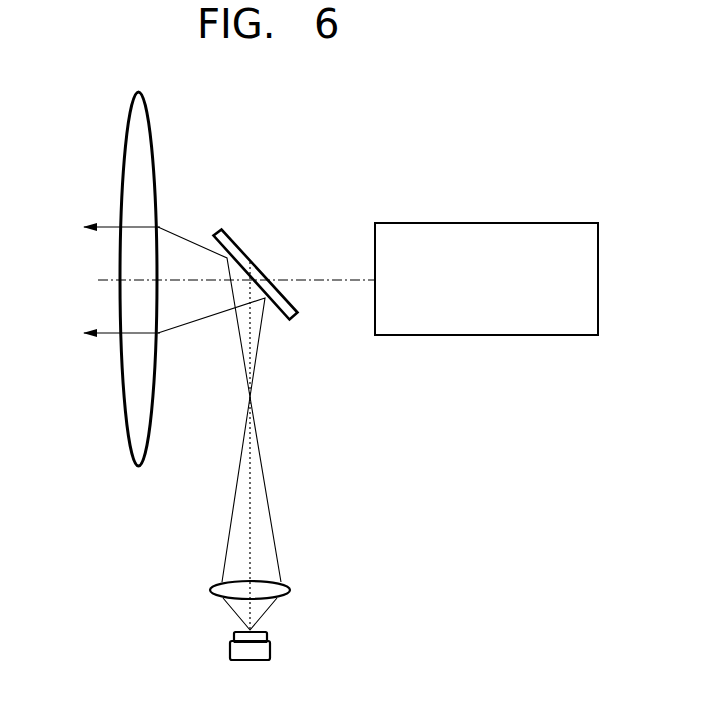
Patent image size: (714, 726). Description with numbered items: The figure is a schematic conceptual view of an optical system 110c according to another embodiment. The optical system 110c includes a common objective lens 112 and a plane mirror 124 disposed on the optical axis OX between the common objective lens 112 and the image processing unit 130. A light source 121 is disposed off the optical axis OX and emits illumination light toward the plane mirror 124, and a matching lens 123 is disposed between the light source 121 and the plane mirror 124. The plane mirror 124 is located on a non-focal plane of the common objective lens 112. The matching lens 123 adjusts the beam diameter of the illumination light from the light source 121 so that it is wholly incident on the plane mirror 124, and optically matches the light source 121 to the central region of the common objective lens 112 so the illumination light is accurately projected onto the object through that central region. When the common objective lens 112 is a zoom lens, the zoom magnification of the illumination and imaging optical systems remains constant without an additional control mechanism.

The common objective lens 112 is at (125, 158).
The plane mirror 124 is at (244, 252).
The optical axis OX is at (323, 277).
The image processing unit 130 is at (457, 223).
The matching lens 123 is at (290, 590).
The light source 121 is at (270, 651).
The optical system 110c is at (110, 507).